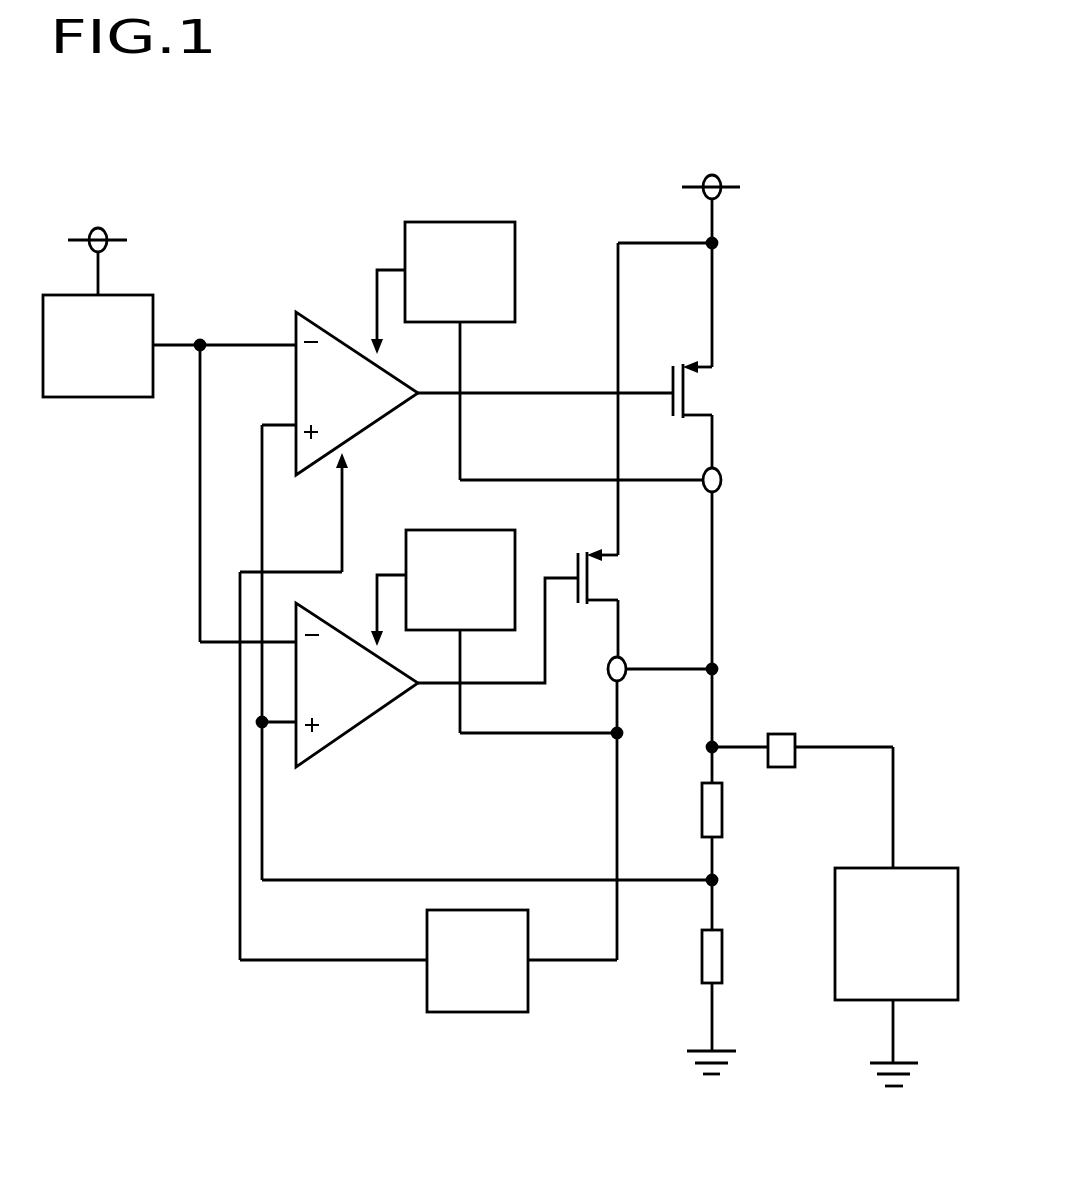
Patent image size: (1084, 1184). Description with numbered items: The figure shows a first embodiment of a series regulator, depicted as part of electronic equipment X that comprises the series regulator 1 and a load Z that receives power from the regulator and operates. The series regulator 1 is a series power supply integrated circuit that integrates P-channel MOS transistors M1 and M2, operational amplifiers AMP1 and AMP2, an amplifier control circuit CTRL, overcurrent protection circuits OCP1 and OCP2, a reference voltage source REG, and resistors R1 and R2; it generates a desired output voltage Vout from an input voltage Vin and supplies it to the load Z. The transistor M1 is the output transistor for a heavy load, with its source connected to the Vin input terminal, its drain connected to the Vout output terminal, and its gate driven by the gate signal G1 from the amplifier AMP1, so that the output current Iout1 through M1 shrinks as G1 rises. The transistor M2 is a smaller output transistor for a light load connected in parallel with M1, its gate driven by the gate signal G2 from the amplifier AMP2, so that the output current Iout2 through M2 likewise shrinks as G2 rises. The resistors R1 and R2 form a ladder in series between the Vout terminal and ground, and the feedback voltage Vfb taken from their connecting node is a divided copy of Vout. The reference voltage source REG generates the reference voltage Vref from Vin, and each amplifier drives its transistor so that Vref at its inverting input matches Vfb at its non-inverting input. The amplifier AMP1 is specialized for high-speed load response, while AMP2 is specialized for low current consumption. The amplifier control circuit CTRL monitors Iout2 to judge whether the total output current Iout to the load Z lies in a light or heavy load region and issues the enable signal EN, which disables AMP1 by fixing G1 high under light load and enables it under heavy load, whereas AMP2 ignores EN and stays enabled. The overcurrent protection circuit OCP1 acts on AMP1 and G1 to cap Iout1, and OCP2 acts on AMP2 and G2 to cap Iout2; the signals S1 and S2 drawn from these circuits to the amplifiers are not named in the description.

The series regulator 1 is at (795, 1118).
The electronic equipment X is at (908, 148).
The reference voltage source REG is at (98, 346).
The input voltage Vin is at (404, 218).
The reference voltage Vref is at (224, 475).
The operational amplifier AMP1 is at (329, 442).
The operational amplifier AMP2 is at (337, 685).
The overcurrent protection circuit OCP1 is at (554, 351).
The overcurrent protection circuit OCP2 is at (514, 634).
The first protection signal S1 is at (384, 296).
The second protection signal S2 is at (384, 594).
The gate signal G1 is at (545, 376).
The gate signal G2 is at (498, 630).
The transistor M1 is at (714, 355).
The transistor M2 is at (619, 603).
The output current Iout1 is at (730, 468).
The output current Iout2 is at (627, 623).
The output current Iout is at (901, 798).
The output voltage Vout is at (800, 785).
The feedback voltage Vfb is at (507, 662).
The resistor R1 is at (731, 813).
The resistor R2 is at (732, 965).
The amplifier control circuit CTRL is at (522, 961).
The enable signal EN is at (333, 766).
The load Z is at (896, 965).